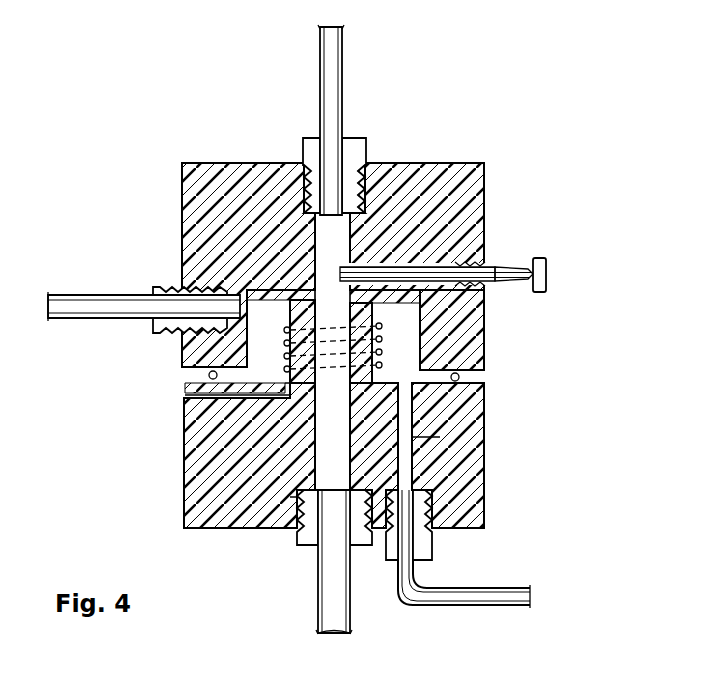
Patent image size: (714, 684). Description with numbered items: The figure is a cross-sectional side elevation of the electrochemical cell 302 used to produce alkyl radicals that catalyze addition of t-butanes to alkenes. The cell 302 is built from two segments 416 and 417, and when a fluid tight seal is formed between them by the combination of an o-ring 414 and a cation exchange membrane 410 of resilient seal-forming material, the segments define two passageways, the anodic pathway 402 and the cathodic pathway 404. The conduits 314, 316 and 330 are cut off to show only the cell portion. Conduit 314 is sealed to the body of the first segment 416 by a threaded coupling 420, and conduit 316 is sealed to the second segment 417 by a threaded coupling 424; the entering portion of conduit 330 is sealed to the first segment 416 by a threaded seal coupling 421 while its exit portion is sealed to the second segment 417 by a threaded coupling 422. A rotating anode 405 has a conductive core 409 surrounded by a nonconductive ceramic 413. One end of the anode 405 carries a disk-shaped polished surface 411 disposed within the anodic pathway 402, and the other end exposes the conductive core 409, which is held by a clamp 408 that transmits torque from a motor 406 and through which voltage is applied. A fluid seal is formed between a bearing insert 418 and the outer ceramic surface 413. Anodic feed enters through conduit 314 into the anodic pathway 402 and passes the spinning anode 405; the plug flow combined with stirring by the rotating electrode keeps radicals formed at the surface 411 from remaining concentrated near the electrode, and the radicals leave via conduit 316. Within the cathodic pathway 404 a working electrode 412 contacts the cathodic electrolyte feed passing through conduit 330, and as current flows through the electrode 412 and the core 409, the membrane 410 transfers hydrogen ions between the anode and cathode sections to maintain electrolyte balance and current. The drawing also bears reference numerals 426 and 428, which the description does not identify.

The electrochemical cell 302 is at (164, 120).
The conduit 314 is at (343, 34).
The conduit 316 is at (312, 588).
The conduit 330 is at (68, 295).
The anodic pathway 402 is at (305, 462).
The cathodic pathway 404 is at (403, 343).
The rotating anode 405 is at (418, 257).
The motor 406 is at (547, 279).
The clamp 408 is at (497, 285).
The conductive core 409 is at (490, 290).
The cation exchange membrane 410 is at (255, 293).
The polished surface 411 is at (320, 268).
The working electrode 412 is at (183, 390).
The nonconductive ceramic 413 is at (362, 200).
The o-ring 414 is at (462, 379).
The first segment 416 is at (375, 229).
The second segment 417 is at (348, 455).
The bearing insert 418 is at (490, 287).
The threaded coupling 420 is at (366, 150).
The threaded seal coupling 421 is at (160, 287).
The threaded coupling 422 is at (430, 556).
The threaded coupling 424 is at (300, 546).
The seal rings 426 is at (440, 437).
The tube end 428 is at (340, 633).